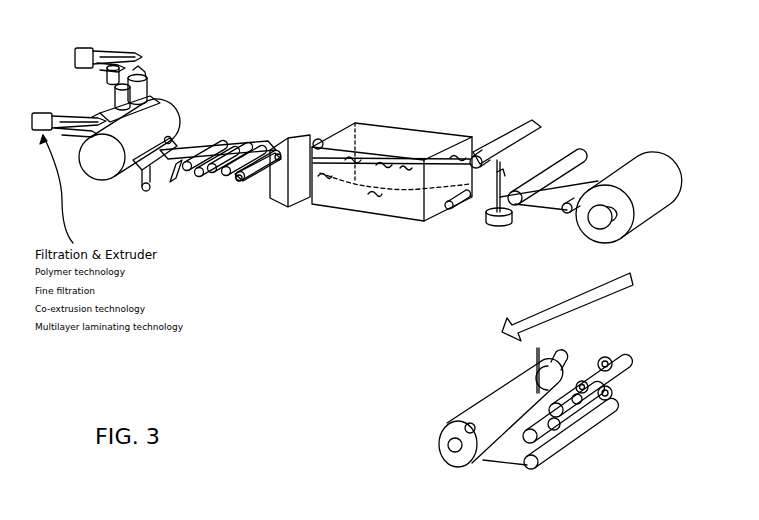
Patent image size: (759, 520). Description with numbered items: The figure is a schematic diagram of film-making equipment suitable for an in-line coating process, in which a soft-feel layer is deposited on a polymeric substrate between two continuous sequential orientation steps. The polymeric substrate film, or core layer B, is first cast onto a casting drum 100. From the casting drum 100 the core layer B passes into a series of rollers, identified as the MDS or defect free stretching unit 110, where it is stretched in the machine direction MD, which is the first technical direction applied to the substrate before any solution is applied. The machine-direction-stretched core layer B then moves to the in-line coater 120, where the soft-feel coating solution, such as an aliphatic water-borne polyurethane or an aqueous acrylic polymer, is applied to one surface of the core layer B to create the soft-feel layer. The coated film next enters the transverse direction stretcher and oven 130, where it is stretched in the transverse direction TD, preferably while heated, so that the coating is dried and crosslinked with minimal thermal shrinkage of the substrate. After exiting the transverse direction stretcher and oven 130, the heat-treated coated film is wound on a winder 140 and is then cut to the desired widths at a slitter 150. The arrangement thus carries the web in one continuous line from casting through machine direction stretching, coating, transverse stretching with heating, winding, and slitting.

The casting drum 100 is at (158, 127).
The machine direction stretcher (MDS) 110 is at (216, 179).
The in-line coater 120 is at (327, 124).
The transverse direction stretcher (TDS) and oven 130 is at (383, 211).
The winder 140 is at (630, 144).
The slitter 150 is at (535, 401).
The core layer B is at (198, 147).
The machine direction MD is at (372, 170).
The transverse direction TD is at (432, 154).